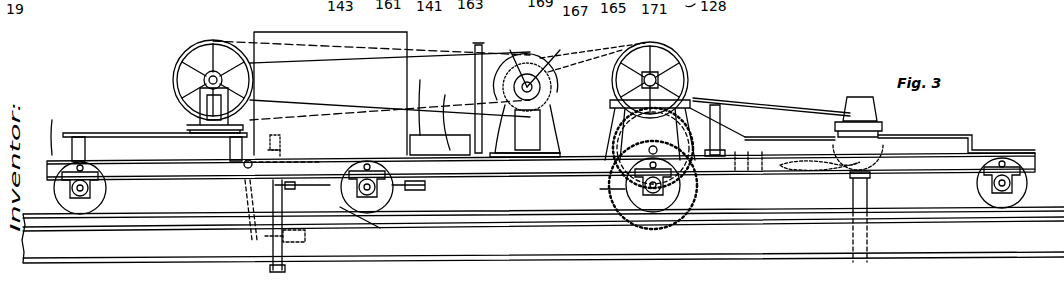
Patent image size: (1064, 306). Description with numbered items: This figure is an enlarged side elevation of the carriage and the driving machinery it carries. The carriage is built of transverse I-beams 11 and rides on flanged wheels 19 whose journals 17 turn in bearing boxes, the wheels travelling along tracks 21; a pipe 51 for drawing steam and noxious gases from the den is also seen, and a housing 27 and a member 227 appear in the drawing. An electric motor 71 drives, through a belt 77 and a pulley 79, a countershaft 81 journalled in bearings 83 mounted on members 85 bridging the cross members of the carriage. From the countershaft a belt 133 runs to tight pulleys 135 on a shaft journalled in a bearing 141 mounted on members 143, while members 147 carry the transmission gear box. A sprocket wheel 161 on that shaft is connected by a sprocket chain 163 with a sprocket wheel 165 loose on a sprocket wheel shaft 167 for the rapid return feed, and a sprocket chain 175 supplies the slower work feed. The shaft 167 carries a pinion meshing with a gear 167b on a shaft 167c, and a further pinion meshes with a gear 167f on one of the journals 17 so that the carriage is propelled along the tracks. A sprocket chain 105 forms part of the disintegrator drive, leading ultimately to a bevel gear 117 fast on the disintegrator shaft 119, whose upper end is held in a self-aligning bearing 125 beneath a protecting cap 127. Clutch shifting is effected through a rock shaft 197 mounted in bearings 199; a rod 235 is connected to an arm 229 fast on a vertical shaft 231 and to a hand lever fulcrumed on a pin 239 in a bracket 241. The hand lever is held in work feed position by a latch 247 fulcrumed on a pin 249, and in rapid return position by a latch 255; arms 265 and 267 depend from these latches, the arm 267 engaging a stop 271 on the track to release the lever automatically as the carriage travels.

The transverse I-beam 11 is at (73, 133).
The journal 17 is at (600, 193).
The flanged wheel 19 is at (104, 191).
The track 21 is at (175, 190).
The housing 27 is at (407, 34).
The pipe 51 is at (128, 247).
The electric motor 71 is at (512, 62).
The belt 77 is at (232, 42).
The pulley 79 is at (183, 52).
The countershaft 81 is at (203, 79).
The bearing 83 is at (196, 101).
The member 85 is at (112, 133).
The sprocket chain 105 is at (758, 100).
The bevel gear 117 is at (917, 149).
The disintegrator shaft 119 is at (870, 197).
The self-aligning bearing 125 is at (880, 126).
The protecting cap 127 is at (878, 104).
The belt 133 is at (303, 60).
The tight pulley 135 is at (550, 59).
The bearing 141 is at (539, 52).
The member 143 is at (55, 129).
The member 147 is at (423, 100).
The sprocket wheel 161 is at (639, 123).
The sprocket chain 163 is at (624, 43).
The sprocket wheel 165 is at (674, 70).
The sprocket wheel shaft 167 is at (657, 75).
The gear 167b is at (734, 100).
The shaft 167c is at (721, 122).
The gear 167f is at (697, 195).
The sprocket chain 175 is at (586, 48).
The rock shaft 197 is at (698, 105).
The bearing 199 is at (488, 148).
The cylinder 227 is at (480, 44).
The arm 229 is at (441, 114).
The vertical shaft 231 is at (440, 142).
The rod 235 is at (416, 195).
The pin 239 is at (281, 138).
The bracket 241 is at (282, 148).
The latch 247 is at (245, 188).
The pin 249 is at (244, 174).
The latch 255 is at (306, 200).
The arm 265 is at (246, 203).
The arm 267 is at (372, 224).
The stop 271 is at (322, 242).